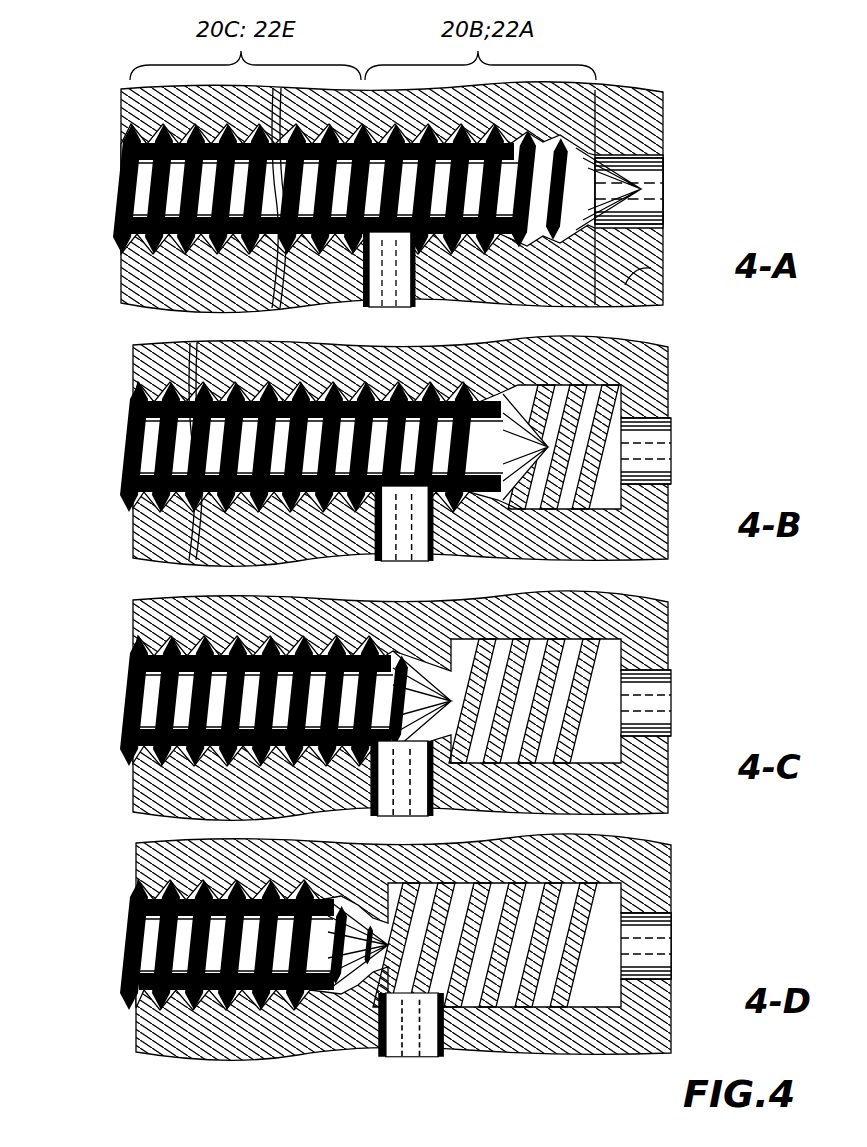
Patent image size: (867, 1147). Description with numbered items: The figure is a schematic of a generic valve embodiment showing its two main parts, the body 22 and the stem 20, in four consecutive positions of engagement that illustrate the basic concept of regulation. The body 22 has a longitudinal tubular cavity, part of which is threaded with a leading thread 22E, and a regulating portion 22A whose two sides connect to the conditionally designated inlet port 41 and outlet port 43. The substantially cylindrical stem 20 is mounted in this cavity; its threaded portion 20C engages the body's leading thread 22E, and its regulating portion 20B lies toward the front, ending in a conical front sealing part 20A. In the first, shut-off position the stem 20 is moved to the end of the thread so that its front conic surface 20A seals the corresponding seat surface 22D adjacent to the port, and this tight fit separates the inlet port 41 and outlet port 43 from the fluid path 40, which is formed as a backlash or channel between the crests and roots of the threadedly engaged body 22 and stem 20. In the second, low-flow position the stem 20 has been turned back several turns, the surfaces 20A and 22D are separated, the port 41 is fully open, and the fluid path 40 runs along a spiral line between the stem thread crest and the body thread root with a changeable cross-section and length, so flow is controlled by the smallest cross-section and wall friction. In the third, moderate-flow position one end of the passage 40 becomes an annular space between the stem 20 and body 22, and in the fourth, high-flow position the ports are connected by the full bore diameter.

In FIG. 4-A, the stem 20 is at (390, 224).
In FIG. 4-B, the stem 20 is at (337, 483).
In FIG. 4-C, the stem 20 is at (269, 701).
In FIG. 4-D, the stem 20 is at (240, 945).
In FIG. 4-A, the conical/ogival front sealing part of the stem 20A is at (642, 205).
In FIG. 4-B, the conical/ogival front sealing part of the stem 20A is at (522, 478).
In FIG. 4-C, the conical/ogival front sealing part of the stem 20A is at (422, 701).
In FIG. 4-D, the conical/ogival front sealing part of the stem 20A is at (358, 945).
In FIG. 4-A, the regulating portion of the stem 20B is at (522, 238).
In FIG. 4-A, the threaded portion of the stem with leading thread 20C is at (165, 162).
In FIG. 4-A, the body of the valve 22 is at (387, 204).
In FIG. 4-B, the body of the valve 22 is at (434, 458).
In FIG. 4-C, the body of the valve 22 is at (443, 707).
In FIG. 4-D, the body of the valve 22 is at (431, 971).
In FIG. 4-A, the regulating portion of the body 22A is at (640, 286).
In FIG. 4-B, the regulating portion of the body 22A is at (563, 447).
In FIG. 4-C, the regulating portion of the body 22A is at (524, 701).
In FIG. 4-D, the regulating portion of the body 22A is at (607, 1042).
In FIG. 4-B, the sealing surface of the seat in the body or the insert 22D is at (657, 450).
In FIG. 4-C, the sealing surface of the seat in the body or the insert 22D is at (660, 686).
In FIG. 4-A, the threaded part of the body with leading thread 22E is at (160, 268).
In FIG. 4-A, the fluid path 40 is at (565, 232).
In FIG. 4-B, the fluid path 40 is at (478, 492).
In FIG. 4-C, the fluid path 40 is at (522, 765).
In FIG. 4-D, the fluid path 40 is at (403, 945).
In FIG. 4-A, the inlet port 41 is at (638, 176).
In FIG. 4-B, the inlet port 41 is at (663, 417).
In FIG. 4-C, the inlet port 41 is at (660, 685).
In FIG. 4-D, the inlet port 41 is at (645, 929).
In FIG. 4-A, the outlet port 43 is at (380, 285).
In FIG. 4-B, the outlet port 43 is at (405, 515).
In FIG. 4-C, the outlet port 43 is at (410, 773).
In FIG. 4-D, the outlet port 43 is at (403, 1015).